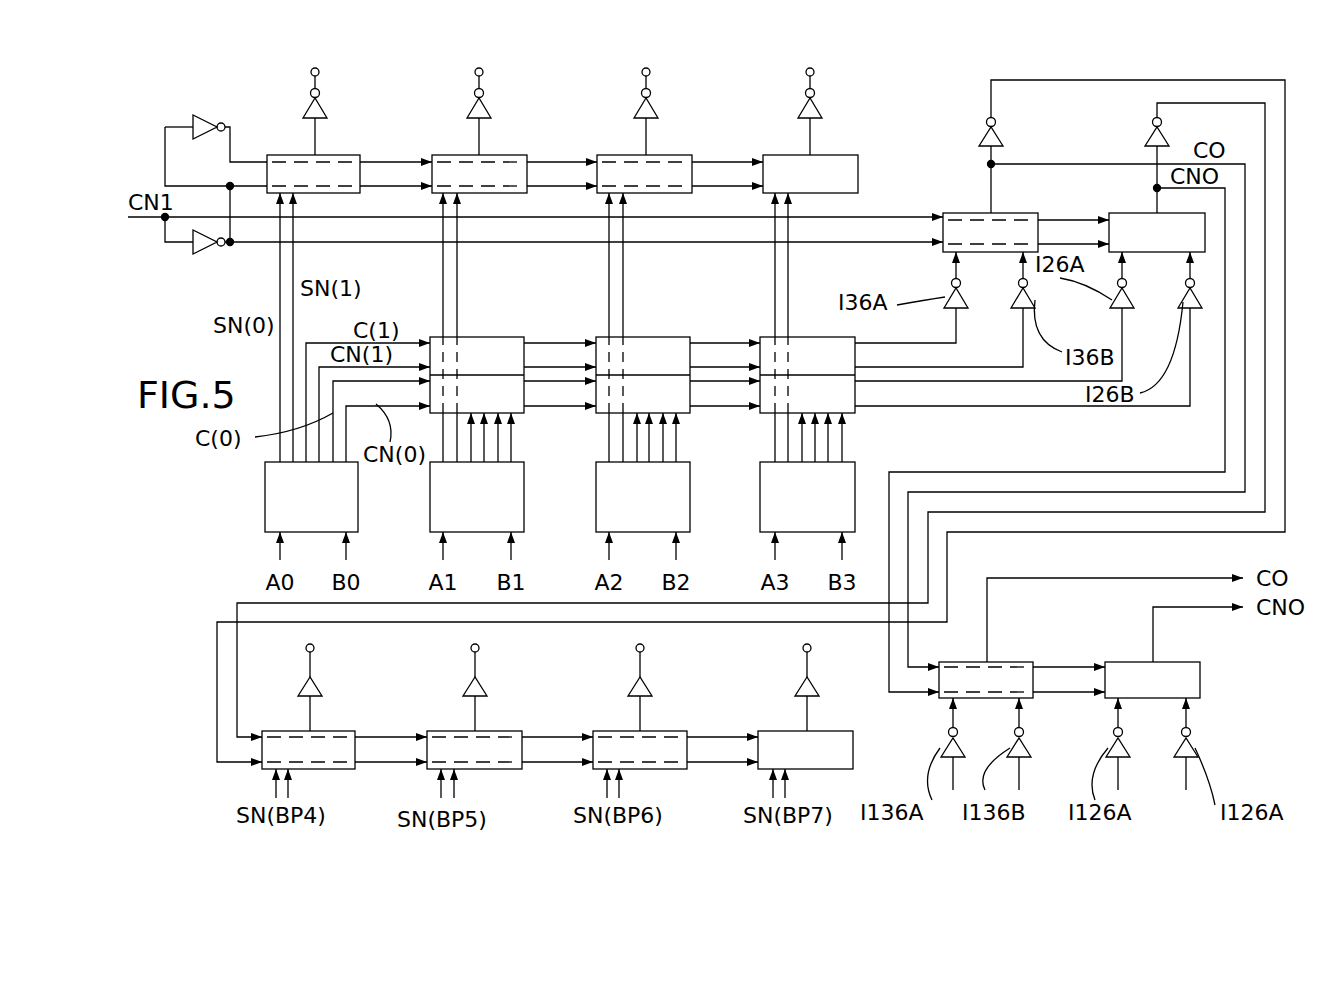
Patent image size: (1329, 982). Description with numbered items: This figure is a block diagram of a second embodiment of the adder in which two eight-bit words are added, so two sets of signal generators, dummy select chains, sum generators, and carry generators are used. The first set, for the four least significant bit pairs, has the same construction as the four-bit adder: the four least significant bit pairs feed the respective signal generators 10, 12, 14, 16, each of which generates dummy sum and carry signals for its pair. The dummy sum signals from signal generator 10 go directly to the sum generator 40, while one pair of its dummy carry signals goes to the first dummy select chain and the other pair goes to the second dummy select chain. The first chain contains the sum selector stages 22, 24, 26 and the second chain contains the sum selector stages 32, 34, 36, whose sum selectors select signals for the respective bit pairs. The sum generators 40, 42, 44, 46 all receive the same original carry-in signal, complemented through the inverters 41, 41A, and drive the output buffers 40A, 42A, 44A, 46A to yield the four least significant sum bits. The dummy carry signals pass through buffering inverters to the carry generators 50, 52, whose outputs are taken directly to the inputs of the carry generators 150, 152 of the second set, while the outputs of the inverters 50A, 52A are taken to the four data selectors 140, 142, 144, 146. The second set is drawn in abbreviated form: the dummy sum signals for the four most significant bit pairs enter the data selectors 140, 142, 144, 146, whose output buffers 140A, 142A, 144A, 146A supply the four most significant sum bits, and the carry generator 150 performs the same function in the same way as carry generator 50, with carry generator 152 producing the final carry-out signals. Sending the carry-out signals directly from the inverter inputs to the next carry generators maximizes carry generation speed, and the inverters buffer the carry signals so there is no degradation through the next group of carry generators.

The signal generator 10 is at (278, 479).
The signal generator 12 is at (446, 479).
The signal generator 14 is at (612, 479).
The signal generator 16 is at (776, 479).
The first sum selector stage of first dummy select chain 22 is at (490, 392).
The sum selector stage of first dummy select chain 24 is at (660, 392).
The sum selector stage of first dummy select chain 26 is at (830, 392).
The first sum selector stage of second dummy select chain 32 is at (465, 348).
The sum selector stage of second dummy select chain 34 is at (640, 350).
The sum selector stage of second dummy select chain 36 is at (800, 350).
The sum generator 40 is at (330, 160).
The sum generator 42 is at (492, 170).
The sum generator 44 is at (670, 168).
The sum generator 46 is at (820, 178).
The output buffer 40A is at (306, 113).
The output buffer 42A is at (470, 113).
The output buffer 44A is at (637, 113).
The output buffer 46A is at (801, 113).
The inverter 41 is at (205, 252).
The inverter 41A is at (195, 124).
The carry generator 50 is at (1002, 243).
The carry generator 52 is at (1178, 243).
The inverter 50A is at (1000, 140).
The inverter 52A is at (1146, 136).
The data selector 140 is at (315, 745).
The data selector 142 is at (483, 750).
The data selector 144 is at (650, 748).
The data selector 146 is at (805, 752).
The output buffer 140A is at (300, 688).
The output buffer 142A is at (465, 688).
The output buffer 144A is at (630, 688).
The output buffer 146A is at (797, 688).
The carry generator 150 is at (985, 670).
The carry generator 152 is at (1180, 676).